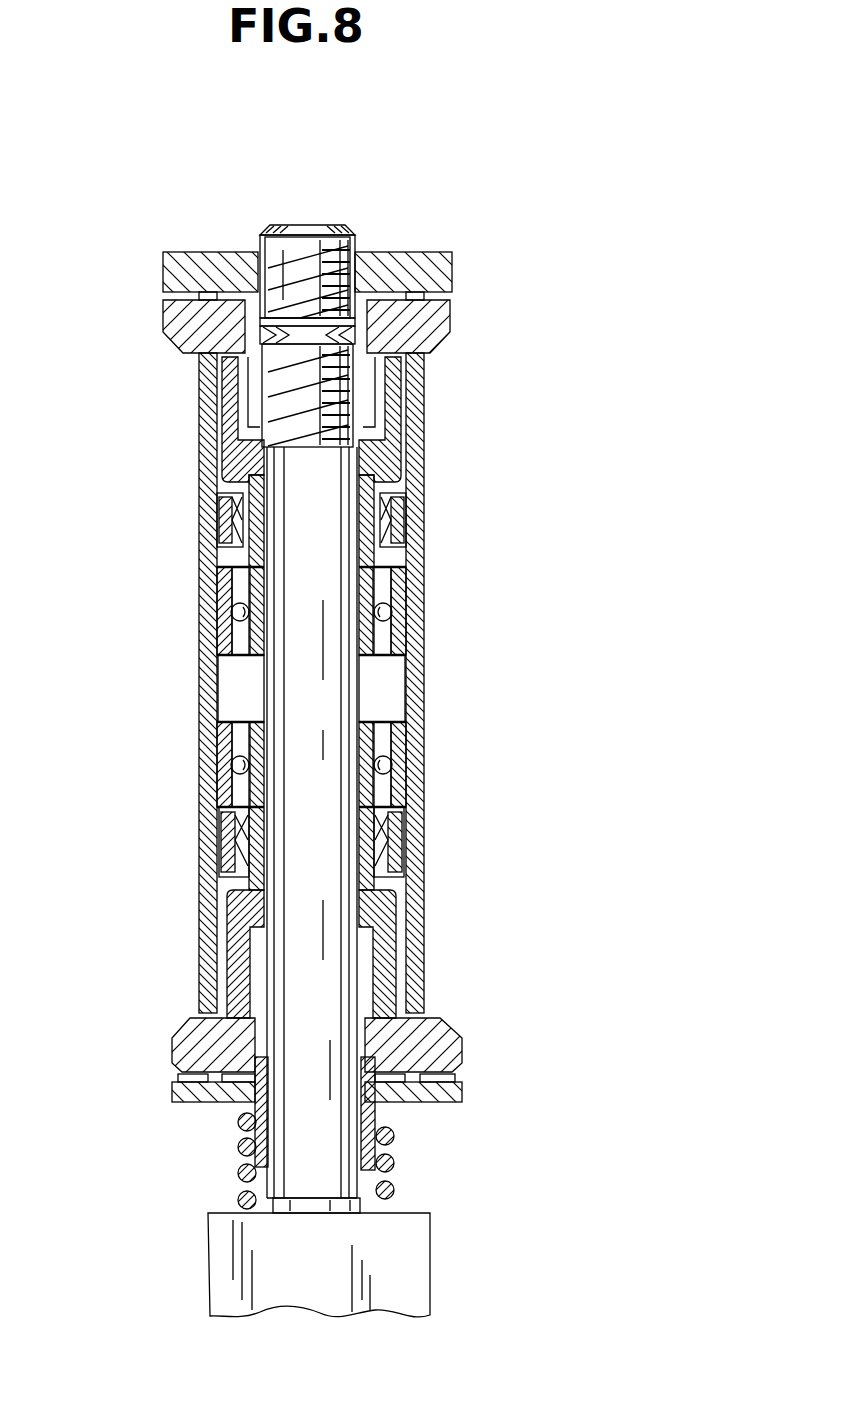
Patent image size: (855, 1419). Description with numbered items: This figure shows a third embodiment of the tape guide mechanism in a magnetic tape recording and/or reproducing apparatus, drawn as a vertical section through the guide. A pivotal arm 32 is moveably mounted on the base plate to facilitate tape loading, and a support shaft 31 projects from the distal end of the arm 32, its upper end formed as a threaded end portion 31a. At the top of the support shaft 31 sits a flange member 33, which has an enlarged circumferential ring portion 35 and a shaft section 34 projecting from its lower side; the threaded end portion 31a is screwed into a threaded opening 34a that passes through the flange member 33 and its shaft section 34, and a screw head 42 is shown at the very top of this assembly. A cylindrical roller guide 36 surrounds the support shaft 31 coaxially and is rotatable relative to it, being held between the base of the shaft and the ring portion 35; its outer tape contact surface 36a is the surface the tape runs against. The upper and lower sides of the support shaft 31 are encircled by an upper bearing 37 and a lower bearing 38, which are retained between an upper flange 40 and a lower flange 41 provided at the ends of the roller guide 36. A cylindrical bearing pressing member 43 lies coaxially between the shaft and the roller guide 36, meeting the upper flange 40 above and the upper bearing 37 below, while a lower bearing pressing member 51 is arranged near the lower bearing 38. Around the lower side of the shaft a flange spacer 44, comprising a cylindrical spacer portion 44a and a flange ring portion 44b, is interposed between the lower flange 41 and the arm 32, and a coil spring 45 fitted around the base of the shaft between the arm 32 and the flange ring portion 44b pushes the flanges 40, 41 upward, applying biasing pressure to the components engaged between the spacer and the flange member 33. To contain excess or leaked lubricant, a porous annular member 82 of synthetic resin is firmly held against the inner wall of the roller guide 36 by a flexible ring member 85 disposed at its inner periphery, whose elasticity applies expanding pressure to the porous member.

The bolt 42 is at (397, 301).
The ring portion 35 is at (415, 262).
The flange member 33 is at (308, 269).
The upper flange 40 is at (180, 322).
The shaft section 34 is at (358, 338).
The threaded opening 34a is at (250, 362).
The threaded end portion 31a is at (356, 367).
The bearing pressing member 43 is at (395, 440).
The flexible ring member 85 is at (222, 497).
The porous annular member 82 is at (405, 520).
The cylindrical roller guide 36 is at (188, 572).
The support shaft 31 is at (343, 555).
The upper bearing 37 is at (397, 640).
The outer tape contact surface 36a is at (198, 667).
The lower bearing 38 is at (400, 752).
The lower bearing pressing member 51 is at (397, 922).
The lower flange 41 is at (190, 1037).
The flange spacer 44 is at (205, 1122).
The flange ring portion 44b is at (447, 1094).
The cylindrical spacer portion 44a is at (247, 1160).
The coil spring 45 is at (393, 1167).
The pivotal arm 32 is at (230, 1257).